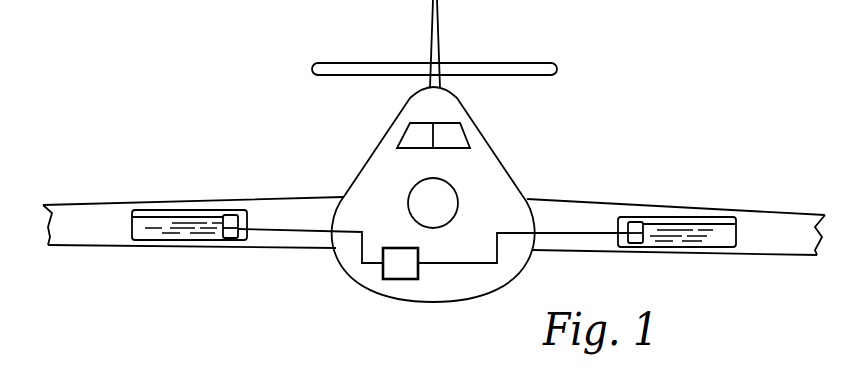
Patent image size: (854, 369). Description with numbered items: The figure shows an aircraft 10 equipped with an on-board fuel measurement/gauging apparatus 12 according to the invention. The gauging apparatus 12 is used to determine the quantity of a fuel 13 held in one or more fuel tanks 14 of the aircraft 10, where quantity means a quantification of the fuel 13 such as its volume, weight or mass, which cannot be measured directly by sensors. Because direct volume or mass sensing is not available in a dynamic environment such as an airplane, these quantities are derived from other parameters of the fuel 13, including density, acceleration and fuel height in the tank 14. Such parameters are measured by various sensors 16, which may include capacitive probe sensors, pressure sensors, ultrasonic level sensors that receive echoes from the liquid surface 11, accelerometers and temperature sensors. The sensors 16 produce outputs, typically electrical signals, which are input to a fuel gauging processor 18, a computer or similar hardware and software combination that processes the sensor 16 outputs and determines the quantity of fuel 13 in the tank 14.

The aircraft 10 is at (228, 104).
The liquid surface 11 is at (188, 217).
The fuel measurement/gauging apparatus 12 is at (403, 281).
The fuel 13 is at (154, 230).
The fuel tank 14 is at (188, 241).
The sensors 16 is at (235, 215).
The fuel gauging processor 18 is at (382, 276).